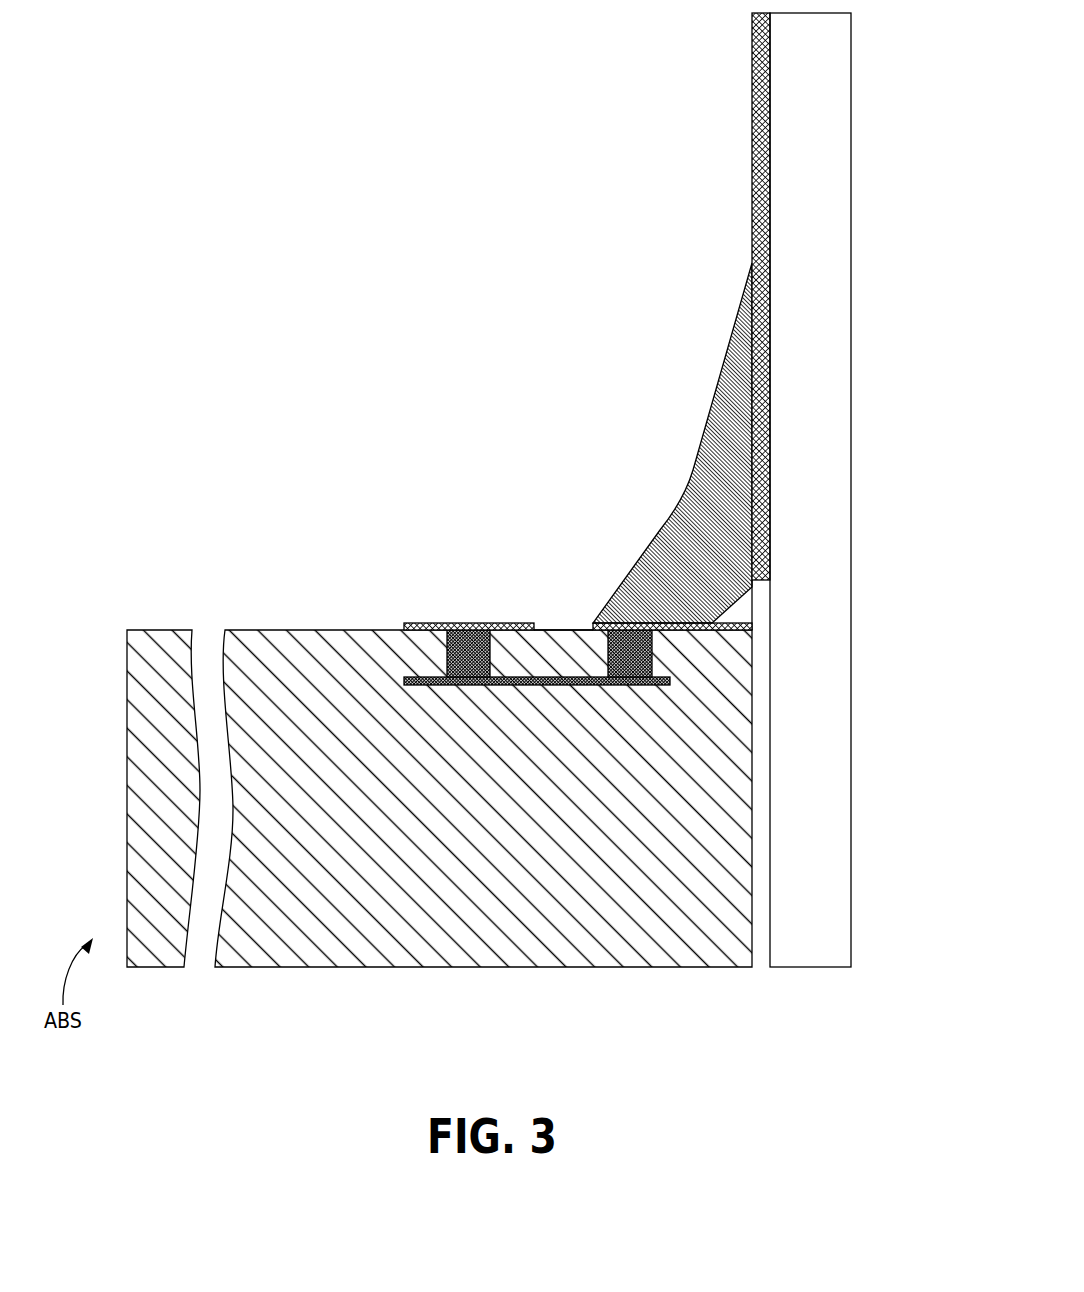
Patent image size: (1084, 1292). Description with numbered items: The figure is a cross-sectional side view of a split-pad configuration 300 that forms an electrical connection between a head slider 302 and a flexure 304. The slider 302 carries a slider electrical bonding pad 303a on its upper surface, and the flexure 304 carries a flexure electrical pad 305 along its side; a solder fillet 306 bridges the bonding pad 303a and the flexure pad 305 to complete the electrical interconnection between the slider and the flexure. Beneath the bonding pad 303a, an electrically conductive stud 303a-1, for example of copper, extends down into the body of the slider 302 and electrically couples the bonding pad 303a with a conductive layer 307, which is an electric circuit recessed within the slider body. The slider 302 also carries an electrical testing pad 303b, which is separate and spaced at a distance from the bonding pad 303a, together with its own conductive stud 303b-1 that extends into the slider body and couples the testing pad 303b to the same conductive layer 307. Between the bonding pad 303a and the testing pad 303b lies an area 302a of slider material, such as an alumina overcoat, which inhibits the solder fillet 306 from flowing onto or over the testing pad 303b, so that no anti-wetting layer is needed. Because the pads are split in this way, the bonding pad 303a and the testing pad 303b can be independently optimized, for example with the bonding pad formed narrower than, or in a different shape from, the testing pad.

The split-pad configuration 300 is at (460, 190).
The head slider 302 is at (560, 962).
The area between bonding pad and testing pad 302a is at (563, 615).
The slider electrical bonding pad 303a is at (655, 658).
The electrically conductive stud 303a-1 is at (630, 663).
The electrical testing pad 303b is at (423, 623).
The electrically conductive stud 303b-1 is at (462, 653).
The flexure 304 is at (822, 956).
The flexure electrical pad 305 is at (752, 173).
The solder fillet 306 is at (732, 383).
The conductive layer 307 is at (530, 685).